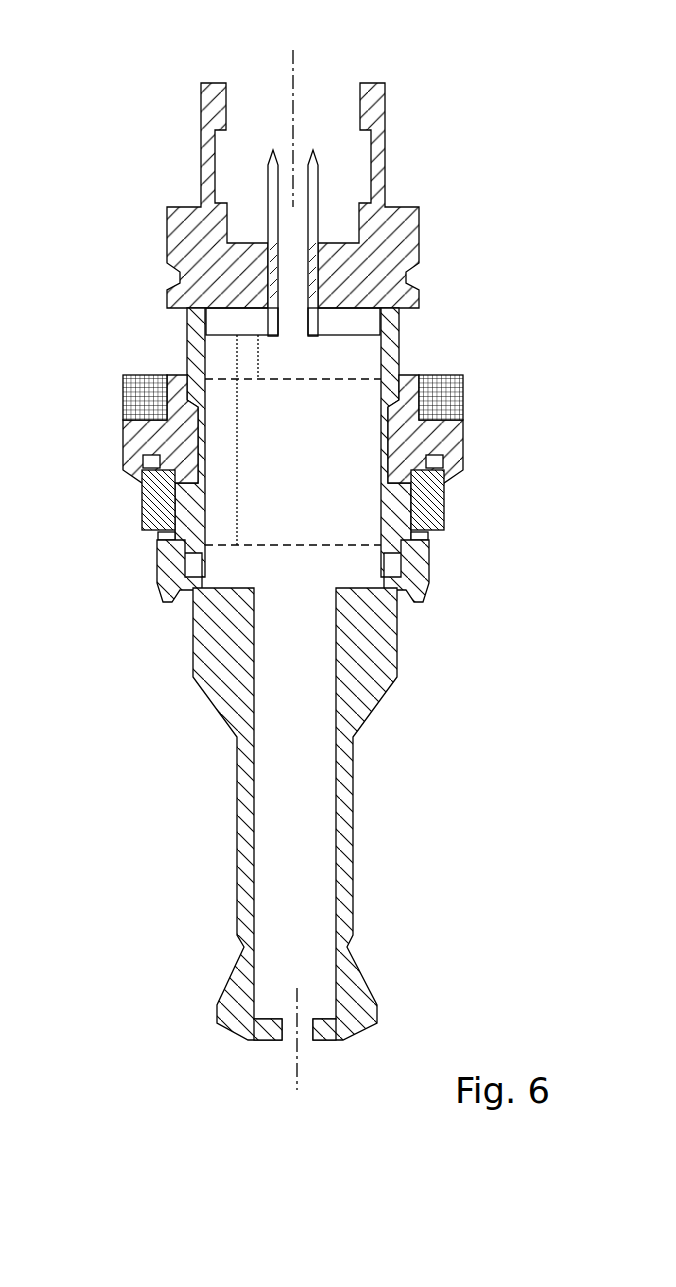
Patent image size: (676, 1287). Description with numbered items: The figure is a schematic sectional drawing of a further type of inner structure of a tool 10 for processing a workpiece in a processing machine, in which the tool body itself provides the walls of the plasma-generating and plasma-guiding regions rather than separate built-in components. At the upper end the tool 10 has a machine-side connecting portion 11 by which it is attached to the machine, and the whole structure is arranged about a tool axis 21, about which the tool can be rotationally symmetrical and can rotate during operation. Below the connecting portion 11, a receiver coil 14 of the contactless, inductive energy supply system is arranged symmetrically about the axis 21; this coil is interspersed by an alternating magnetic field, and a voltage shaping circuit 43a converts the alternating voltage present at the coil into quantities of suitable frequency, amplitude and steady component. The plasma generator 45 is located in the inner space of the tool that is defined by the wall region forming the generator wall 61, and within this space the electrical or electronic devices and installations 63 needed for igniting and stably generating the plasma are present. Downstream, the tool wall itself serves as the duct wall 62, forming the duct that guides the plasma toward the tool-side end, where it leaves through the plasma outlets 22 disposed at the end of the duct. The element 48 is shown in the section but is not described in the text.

The tool 10 is at (83, 218).
The machine-side connecting portion 11 is at (432, 79).
The receiver coil 14 is at (140, 377).
The tool axis 21 is at (293, 67).
The plasma outlets 22 is at (282, 1042).
The voltage shaping circuit 43a is at (195, 322).
The plasma generator 45 is at (258, 525).
The inner tube / electrode 48 is at (318, 174).
The generator wall 61 is at (382, 520).
The duct wall 62 is at (340, 806).
The electrical or electronic devices 63 is at (283, 381).